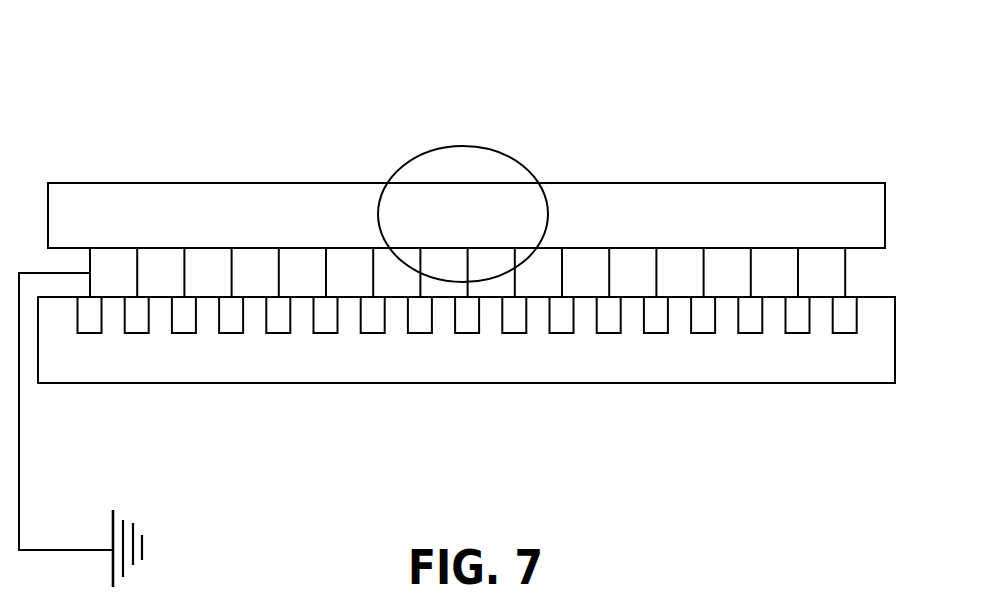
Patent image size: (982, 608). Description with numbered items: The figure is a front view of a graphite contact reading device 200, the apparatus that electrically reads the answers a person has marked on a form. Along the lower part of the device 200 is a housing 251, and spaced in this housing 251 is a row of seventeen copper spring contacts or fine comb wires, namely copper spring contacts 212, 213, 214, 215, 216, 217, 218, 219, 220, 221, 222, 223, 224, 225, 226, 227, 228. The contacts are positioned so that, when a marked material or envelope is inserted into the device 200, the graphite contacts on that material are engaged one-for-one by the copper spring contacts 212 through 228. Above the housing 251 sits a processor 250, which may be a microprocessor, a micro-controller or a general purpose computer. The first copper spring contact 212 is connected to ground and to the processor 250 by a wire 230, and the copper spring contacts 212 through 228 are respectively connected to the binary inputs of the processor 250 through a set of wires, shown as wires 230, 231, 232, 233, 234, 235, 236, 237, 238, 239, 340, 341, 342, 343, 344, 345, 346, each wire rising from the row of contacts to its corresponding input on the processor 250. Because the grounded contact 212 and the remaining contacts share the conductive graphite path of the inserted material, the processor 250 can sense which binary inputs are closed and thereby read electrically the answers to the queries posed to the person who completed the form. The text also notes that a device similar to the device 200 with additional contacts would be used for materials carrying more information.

The graphite contact reading device 200 is at (354, 86).
The processor 250 is at (48, 215).
The housing 251 is at (318, 385).
The wire 237 is at (383, 178).
The wire 238 is at (535, 183).
The wire 230 is at (92, 262).
The wire 231 is at (138, 265).
The wire 232 is at (184, 270).
The wire 233 is at (232, 268).
The wire 234 is at (279, 268).
The wire 235 is at (326, 277).
The wire 236 is at (373, 277).
The wire 239 is at (513, 283).
The wire 340 is at (562, 277).
The wire 341 is at (609, 277).
The wire 342 is at (656, 277).
The wire 343 is at (703, 277).
The wire 344 is at (750, 273).
The wire 345 is at (798, 273).
The wire 346 is at (845, 273).
The copper spring contact 212 is at (90, 333).
The copper spring contact 213 is at (147, 333).
The copper spring contact 214 is at (195, 333).
The copper spring contact 215 is at (233, 333).
The copper spring contact 216 is at (272, 334).
The copper spring contact 217 is at (318, 334).
The copper spring contact 218 is at (367, 334).
The copper spring contact 219 is at (413, 334).
The copper spring contact 220 is at (463, 334).
The copper spring contact 221 is at (510, 334).
The copper spring contact 222 is at (558, 333).
The copper spring contact 223 is at (610, 333).
The copper spring contact 224 is at (660, 333).
The copper spring contact 225 is at (703, 333).
The copper spring contact 226 is at (752, 333).
The copper spring contact 227 is at (798, 333).
The copper spring contact 228 is at (847, 333).